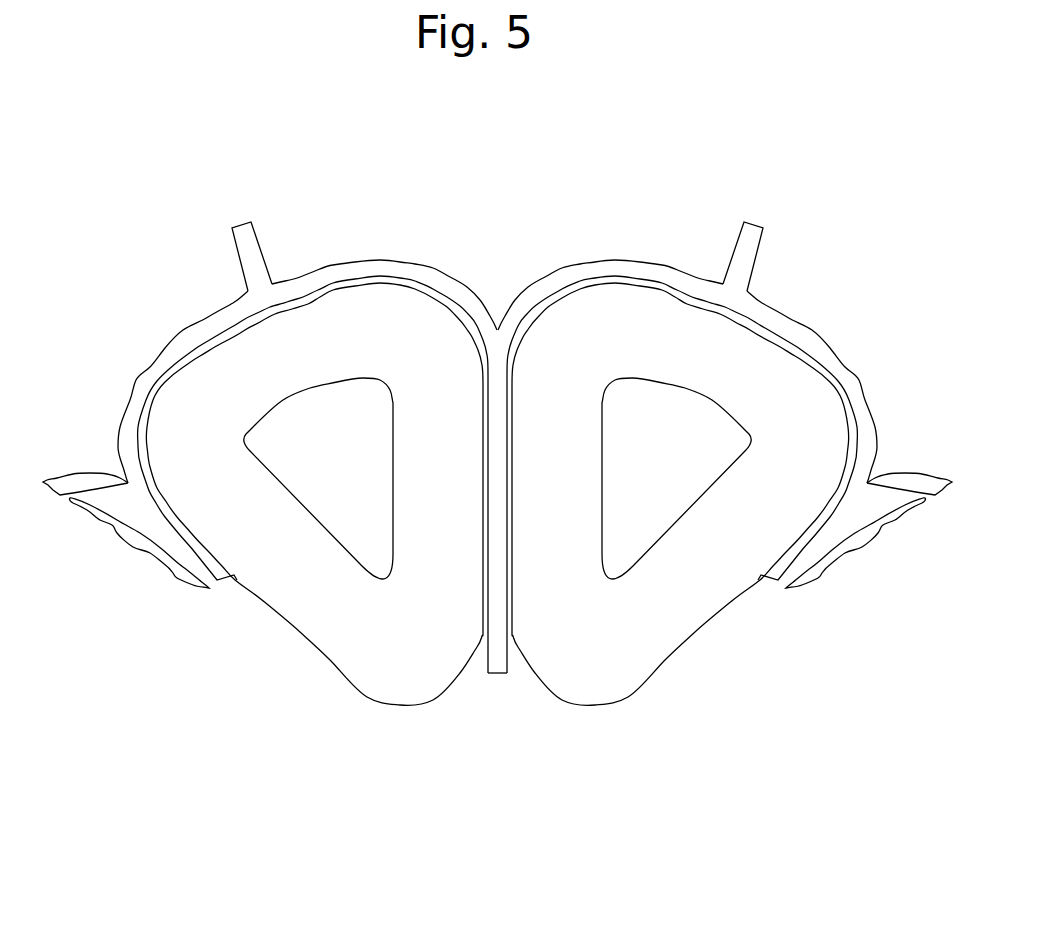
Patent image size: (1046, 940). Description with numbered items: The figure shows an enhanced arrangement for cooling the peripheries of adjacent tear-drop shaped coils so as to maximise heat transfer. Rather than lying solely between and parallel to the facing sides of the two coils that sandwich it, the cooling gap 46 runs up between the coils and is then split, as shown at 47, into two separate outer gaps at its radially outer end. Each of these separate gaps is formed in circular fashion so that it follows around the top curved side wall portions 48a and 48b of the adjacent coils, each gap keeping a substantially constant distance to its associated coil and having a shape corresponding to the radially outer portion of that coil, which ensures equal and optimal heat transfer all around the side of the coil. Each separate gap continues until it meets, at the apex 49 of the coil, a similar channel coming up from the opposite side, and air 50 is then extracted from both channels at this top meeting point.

The cooling gap 46 is at (485, 628).
The split of the cooling gap 47 is at (497, 325).
The top curved side wall portion 48a is at (347, 297).
The top curved side wall portion 48b is at (610, 292).
The apex 49 is at (250, 288).
The air 50 is at (238, 222).